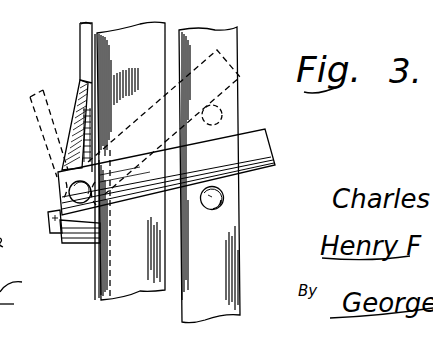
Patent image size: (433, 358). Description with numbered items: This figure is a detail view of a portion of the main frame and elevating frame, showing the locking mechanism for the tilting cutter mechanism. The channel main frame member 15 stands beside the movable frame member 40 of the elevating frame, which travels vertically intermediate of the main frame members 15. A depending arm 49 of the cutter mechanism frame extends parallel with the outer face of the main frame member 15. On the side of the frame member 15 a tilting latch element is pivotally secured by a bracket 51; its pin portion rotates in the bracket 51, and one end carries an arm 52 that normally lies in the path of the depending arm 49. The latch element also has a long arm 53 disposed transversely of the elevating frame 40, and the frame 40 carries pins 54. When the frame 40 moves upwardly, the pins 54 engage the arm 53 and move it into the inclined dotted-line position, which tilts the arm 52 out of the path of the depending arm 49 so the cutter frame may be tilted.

The main frame member 15 is at (100, 275).
The movable frame member 40 is at (182, 303).
The depending arm 49 is at (79, 37).
The bracket 51 is at (63, 240).
The arm 52 is at (70, 148).
The arm 53 is at (219, 52).
The pin 54 is at (239, 78).